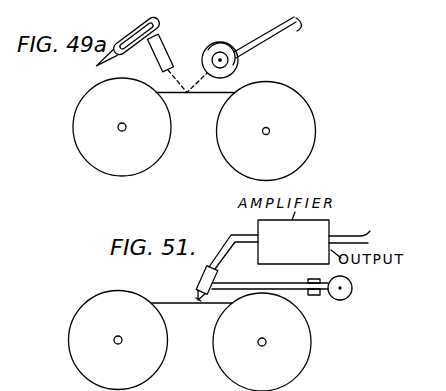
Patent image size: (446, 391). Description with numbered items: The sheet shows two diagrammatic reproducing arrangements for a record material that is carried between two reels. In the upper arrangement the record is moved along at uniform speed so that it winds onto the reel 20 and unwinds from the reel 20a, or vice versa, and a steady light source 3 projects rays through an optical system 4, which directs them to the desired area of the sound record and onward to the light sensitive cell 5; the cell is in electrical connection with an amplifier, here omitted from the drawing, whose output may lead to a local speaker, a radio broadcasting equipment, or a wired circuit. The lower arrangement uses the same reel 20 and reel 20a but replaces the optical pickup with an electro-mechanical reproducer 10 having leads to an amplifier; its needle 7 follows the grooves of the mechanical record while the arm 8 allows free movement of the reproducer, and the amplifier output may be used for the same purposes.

In FIG. 49A, the steady light source 3 is at (128, 36).
In FIG. 49A, the optical system 4 is at (152, 53).
In FIG. 49A, the light sensitive cell 5 is at (208, 46).
In FIG. 49A, the reel 20 is at (108, 153).
In FIG. 51, the reel 20 is at (107, 370).
In FIG. 49A, the reel 20a is at (260, 155).
In FIG. 51, the reel 20a is at (250, 372).
In FIG. 51, the needle 7 is at (198, 300).
In FIG. 51, the arm 8 is at (258, 282).
In FIG. 51, the electro-mechanical reproducer 10 is at (201, 278).